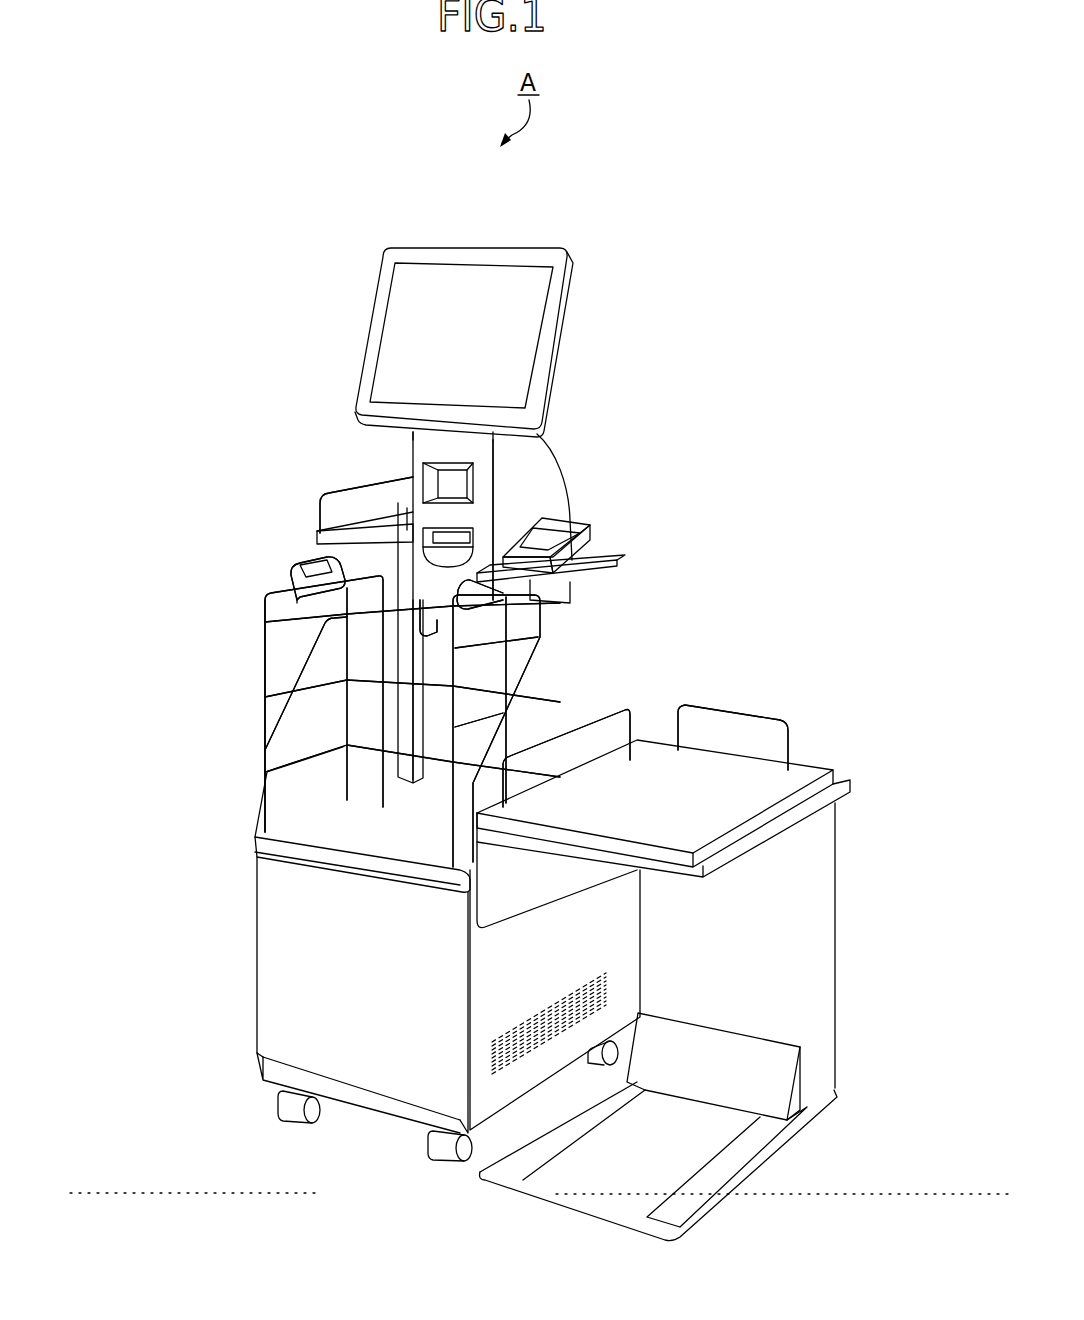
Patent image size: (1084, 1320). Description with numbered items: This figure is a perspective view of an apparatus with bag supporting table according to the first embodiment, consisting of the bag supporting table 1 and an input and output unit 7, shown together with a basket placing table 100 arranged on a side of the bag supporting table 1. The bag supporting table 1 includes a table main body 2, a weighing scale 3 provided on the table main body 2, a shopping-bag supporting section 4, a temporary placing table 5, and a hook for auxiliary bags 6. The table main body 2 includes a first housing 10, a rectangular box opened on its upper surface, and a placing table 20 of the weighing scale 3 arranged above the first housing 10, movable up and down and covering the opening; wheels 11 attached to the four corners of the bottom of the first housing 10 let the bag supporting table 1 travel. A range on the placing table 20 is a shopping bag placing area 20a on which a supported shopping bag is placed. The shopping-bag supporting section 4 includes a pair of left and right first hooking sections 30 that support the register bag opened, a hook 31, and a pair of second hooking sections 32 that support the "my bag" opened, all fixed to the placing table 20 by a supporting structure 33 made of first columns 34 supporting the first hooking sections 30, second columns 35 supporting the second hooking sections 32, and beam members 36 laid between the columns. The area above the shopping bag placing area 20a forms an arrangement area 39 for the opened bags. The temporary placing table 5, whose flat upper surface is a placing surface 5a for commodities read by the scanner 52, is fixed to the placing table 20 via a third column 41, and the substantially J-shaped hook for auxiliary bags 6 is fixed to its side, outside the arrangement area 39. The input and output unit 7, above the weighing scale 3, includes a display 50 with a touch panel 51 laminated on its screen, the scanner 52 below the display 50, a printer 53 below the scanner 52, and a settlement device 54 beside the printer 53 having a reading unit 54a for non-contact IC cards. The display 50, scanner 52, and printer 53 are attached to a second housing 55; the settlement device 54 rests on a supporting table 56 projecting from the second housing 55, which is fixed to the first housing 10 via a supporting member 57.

The bag supporting table 1 is at (250, 1073).
The table main body 2 is at (250, 1033).
The weighing scale 3 is at (246, 853).
The shopping-bag supporting section 4 is at (258, 603).
The temporary placing table 5 is at (313, 557).
The placing surface 5a is at (400, 525).
The hook for auxiliary bags 6 is at (318, 558).
The input and output unit 7 is at (404, 243).
The first housing 10 is at (507, 1100).
The wheels 11 is at (300, 1122).
The placing table 20 is at (300, 850).
The shopping bag placing area 20a is at (368, 832).
The first hooking sections 30 is at (358, 520).
The hook 31 is at (263, 752).
The second hooking sections 32 is at (440, 528).
The supporting structure 33 is at (325, 648).
The first columns 34 is at (555, 690).
The second columns 35 is at (520, 660).
The beam members 36 is at (268, 625).
The arrangement area 39 is at (276, 749).
The third column 41 is at (401, 790).
The display 50 is at (492, 248).
The touch panel 51 is at (530, 306).
The scanner 52 is at (470, 455).
The printer 53 is at (445, 598).
The settlement device 54 is at (572, 518).
The reading unit 54a is at (548, 543).
The second housing 55 is at (548, 472).
The supporting table 56 is at (612, 565).
The supporting member 57 is at (575, 585).
The basket placing table 100 is at (830, 770).